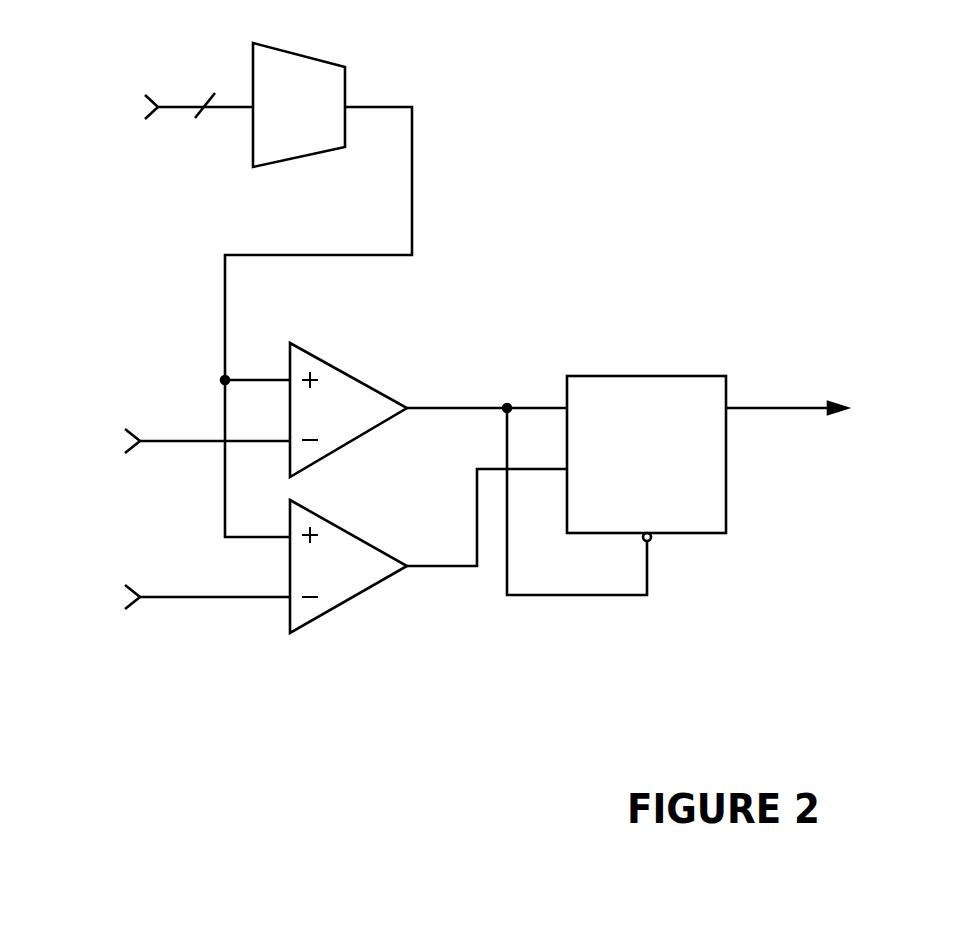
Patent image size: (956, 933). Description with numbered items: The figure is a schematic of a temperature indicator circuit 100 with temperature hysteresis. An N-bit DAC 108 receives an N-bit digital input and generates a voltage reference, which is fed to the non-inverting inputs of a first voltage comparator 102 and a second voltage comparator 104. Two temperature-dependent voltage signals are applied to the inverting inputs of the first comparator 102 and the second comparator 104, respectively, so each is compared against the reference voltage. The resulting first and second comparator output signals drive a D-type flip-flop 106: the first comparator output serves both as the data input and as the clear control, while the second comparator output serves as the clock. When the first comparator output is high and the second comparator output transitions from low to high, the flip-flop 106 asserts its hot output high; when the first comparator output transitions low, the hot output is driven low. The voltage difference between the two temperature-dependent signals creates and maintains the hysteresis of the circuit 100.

The temperature indicator circuit 100 is at (485, 354).
The first voltage comparator 102 is at (363, 380).
The second voltage comparator 104 is at (375, 594).
The D-type flip-flop 106 is at (727, 458).
The N-bit DAC 108 is at (316, 58).